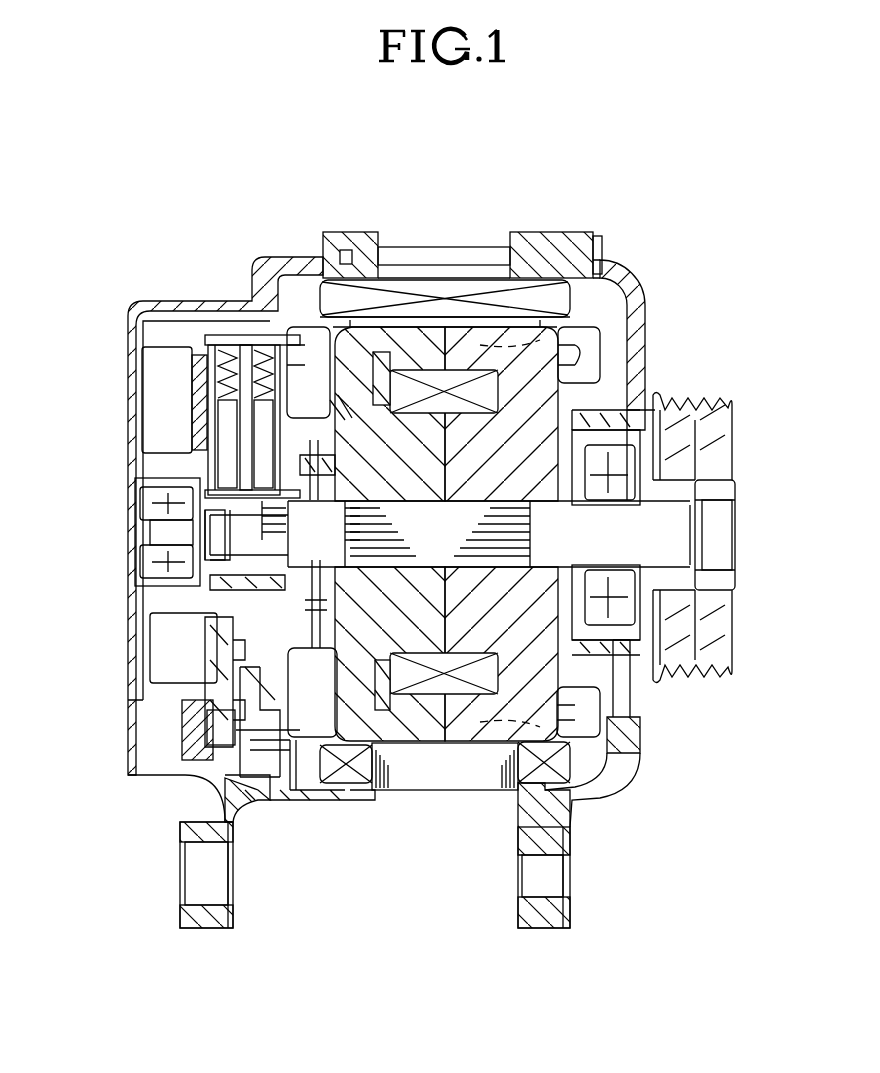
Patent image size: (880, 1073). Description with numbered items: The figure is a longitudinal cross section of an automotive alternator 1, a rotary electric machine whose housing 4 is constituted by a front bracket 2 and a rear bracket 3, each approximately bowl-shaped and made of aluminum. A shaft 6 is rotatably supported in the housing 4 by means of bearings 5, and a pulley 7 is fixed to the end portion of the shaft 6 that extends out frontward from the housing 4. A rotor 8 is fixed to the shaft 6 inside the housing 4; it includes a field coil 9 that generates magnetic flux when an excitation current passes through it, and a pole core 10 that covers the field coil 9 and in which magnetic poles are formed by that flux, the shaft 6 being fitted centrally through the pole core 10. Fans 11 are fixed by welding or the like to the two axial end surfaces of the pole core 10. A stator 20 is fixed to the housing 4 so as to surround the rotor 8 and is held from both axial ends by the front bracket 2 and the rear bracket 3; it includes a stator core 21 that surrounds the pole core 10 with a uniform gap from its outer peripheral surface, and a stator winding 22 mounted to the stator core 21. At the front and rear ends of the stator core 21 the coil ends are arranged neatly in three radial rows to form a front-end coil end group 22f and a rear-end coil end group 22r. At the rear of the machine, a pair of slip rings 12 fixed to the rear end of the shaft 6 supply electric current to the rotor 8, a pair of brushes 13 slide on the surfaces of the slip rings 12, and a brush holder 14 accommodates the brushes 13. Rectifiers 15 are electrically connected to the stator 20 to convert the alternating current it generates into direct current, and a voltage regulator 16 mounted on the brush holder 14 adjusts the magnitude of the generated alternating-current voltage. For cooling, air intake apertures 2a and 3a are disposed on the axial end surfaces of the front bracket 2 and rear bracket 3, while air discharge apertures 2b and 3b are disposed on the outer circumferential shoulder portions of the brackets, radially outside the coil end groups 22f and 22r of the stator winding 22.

The automotive alternator 1 is at (100, 168).
The front bracket 2 is at (645, 312).
The air intake aperture 2a is at (635, 690).
The air discharge aperture 2b is at (612, 782).
The rear bracket 3 is at (246, 275).
The air intake aperture 3a is at (130, 652).
The air discharge aperture 3b is at (296, 793).
The housing 4 is at (640, 273).
The bearings 5 is at (626, 408).
The shaft 6 is at (685, 540).
The pulley 7 is at (692, 406).
The rotor 8 is at (481, 196).
The field coil 9 is at (430, 378).
The pole core 10 is at (470, 332).
The fans 11 is at (588, 340).
The slip rings 12 is at (240, 520).
The brushes 13 is at (268, 455).
The brush holder 14 is at (232, 338).
The rectifiers 15 is at (178, 704).
The voltage regulator 16 is at (195, 380).
The stator 20 is at (508, 848).
The stator core 21 is at (456, 797).
The stator winding 22 is at (492, 795).
The rear-end coil end group 22r is at (342, 783).
The front-end coil end group 22f is at (566, 778).